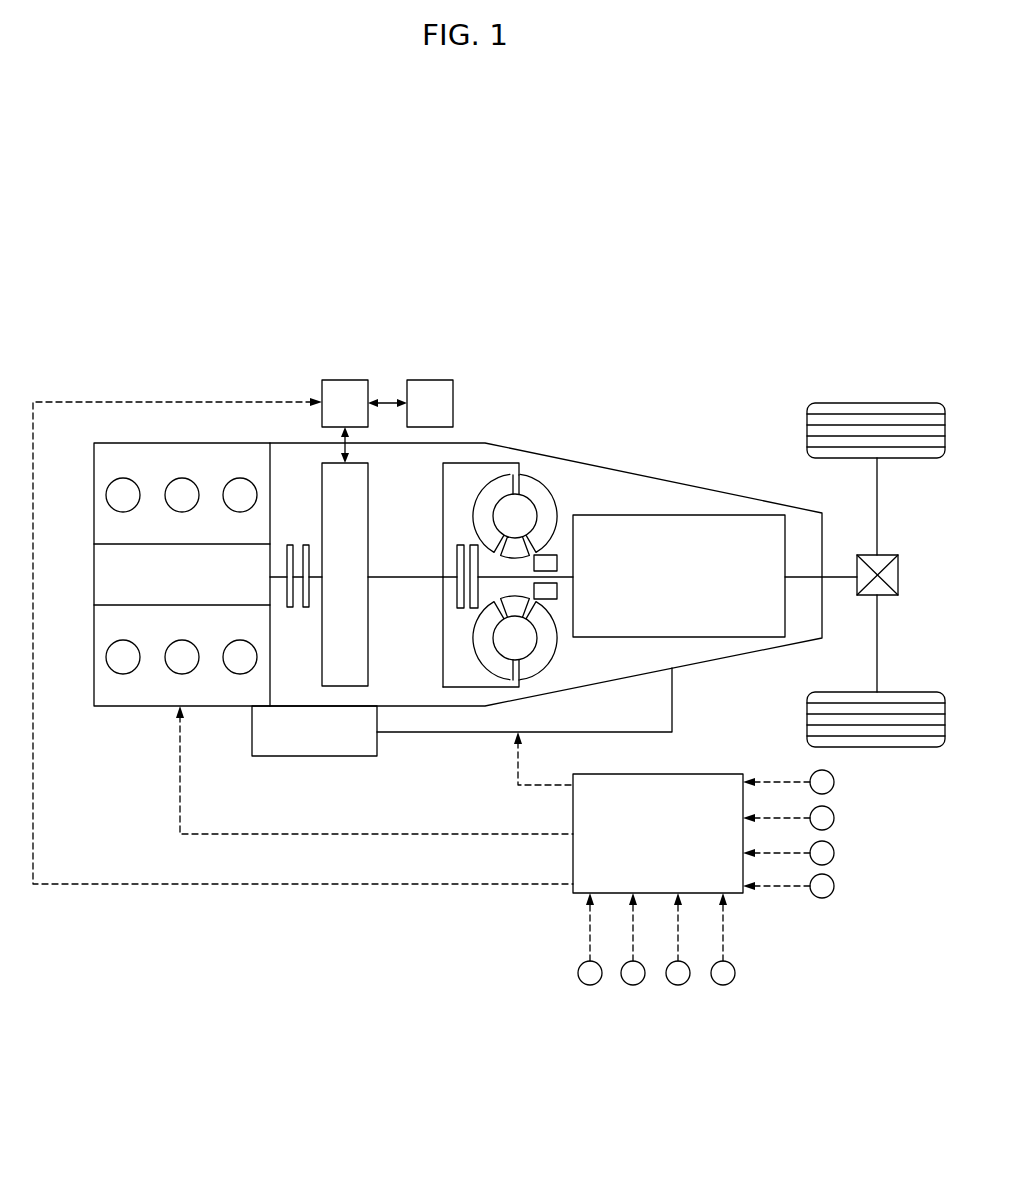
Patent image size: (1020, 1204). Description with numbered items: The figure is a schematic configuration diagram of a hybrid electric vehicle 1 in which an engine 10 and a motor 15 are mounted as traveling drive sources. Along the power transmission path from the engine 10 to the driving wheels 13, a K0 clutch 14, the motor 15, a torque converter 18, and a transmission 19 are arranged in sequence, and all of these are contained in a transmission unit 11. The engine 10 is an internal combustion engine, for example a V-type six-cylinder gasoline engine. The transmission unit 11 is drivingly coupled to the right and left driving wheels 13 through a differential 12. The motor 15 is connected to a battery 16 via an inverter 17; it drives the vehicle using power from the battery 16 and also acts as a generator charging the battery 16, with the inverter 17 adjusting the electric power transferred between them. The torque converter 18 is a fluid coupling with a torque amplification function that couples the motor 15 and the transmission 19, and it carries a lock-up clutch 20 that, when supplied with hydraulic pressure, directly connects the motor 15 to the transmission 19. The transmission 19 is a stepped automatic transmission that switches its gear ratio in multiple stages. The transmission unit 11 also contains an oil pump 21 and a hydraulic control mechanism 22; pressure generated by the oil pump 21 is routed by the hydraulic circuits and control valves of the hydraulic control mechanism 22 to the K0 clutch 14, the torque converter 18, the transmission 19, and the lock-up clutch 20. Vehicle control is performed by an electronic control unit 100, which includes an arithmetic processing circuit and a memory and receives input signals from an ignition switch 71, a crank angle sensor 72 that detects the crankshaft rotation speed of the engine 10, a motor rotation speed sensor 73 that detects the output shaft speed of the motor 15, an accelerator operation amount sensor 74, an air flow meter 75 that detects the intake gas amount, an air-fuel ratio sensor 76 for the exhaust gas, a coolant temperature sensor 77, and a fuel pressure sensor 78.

The hybrid electric vehicle 1 is at (609, 421).
The engine 10 is at (218, 707).
The transmission unit 11 is at (745, 656).
The differential 12 is at (887, 554).
The driving wheels 13 is at (925, 459).
The K0 clutch 14 is at (306, 545).
The motor 15 is at (368, 494).
The battery 16 is at (454, 401).
The inverter 17 is at (322, 409).
The torque converter 18 is at (556, 493).
The transmission 19 is at (606, 638).
The lock-up clutch 20 is at (457, 559).
The oil pump 21 is at (330, 757).
The hydraulic control mechanism 22 is at (440, 733).
The electronic control unit 100 is at (700, 773).
The ignition switch 71 is at (835, 782).
The crank angle sensor 72 is at (835, 818).
The motor rotation speed sensor 73 is at (835, 853).
The accelerator operation amount sensor 74 is at (835, 886).
The air flow meter 75 is at (723, 985).
The air-fuel ratio sensor 76 is at (678, 985).
The coolant temperature sensor 77 is at (633, 985).
The fuel pressure sensor 78 is at (590, 985).